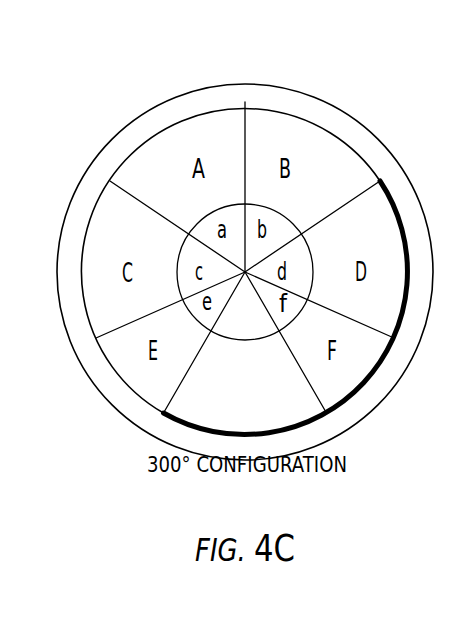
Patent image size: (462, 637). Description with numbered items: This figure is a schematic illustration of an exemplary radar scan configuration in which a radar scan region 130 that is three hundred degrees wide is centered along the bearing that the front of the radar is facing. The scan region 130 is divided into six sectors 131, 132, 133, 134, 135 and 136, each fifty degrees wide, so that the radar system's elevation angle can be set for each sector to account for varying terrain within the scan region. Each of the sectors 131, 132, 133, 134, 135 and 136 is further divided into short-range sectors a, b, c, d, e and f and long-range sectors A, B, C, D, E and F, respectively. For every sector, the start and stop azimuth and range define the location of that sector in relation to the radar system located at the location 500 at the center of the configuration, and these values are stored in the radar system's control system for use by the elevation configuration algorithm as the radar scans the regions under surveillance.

The radar scan region 130 is at (266, 85).
The sector 131 is at (160, 408).
The sector 132 is at (108, 230).
The sector 133 is at (180, 147).
The sector 134 is at (295, 138).
The sector 135 is at (373, 227).
The sector 136 is at (365, 410).
The location 500 is at (246, 280).